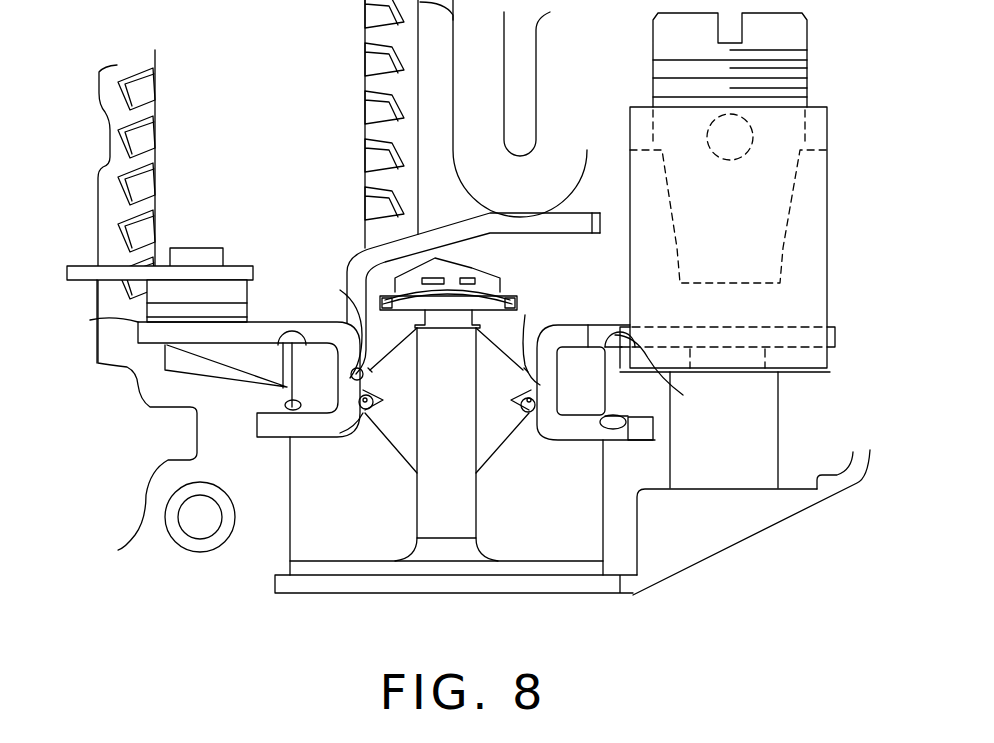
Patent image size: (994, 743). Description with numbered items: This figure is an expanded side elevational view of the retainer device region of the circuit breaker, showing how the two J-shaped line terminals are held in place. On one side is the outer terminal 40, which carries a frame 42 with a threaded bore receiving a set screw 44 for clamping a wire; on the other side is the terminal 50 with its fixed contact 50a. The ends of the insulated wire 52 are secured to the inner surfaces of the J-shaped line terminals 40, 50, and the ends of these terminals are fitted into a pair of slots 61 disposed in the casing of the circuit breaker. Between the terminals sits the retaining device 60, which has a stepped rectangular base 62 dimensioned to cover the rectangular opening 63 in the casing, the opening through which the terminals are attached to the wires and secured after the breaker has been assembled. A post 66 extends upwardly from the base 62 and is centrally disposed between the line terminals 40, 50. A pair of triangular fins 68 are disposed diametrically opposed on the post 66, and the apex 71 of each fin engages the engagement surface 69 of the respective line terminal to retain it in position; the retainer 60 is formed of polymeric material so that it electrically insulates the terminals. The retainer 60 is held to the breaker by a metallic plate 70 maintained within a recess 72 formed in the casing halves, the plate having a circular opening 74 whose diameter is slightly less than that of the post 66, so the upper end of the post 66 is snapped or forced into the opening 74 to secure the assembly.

The outer terminal 40 is at (590, 433).
The frame 42 is at (829, 231).
The set screw 44 is at (808, 43).
The terminal 50 is at (270, 428).
The fixed contact 50a is at (138, 318).
The insulated wire 52 is at (357, 427).
The retaining device 60 is at (348, 621).
The slot 61 is at (292, 405).
The stepped rectangular base 62 is at (468, 587).
The rectangular opening 63 is at (618, 588).
The post 66 is at (428, 511).
The triangular fin 68 is at (390, 440).
The engagement surface 69 is at (356, 336).
The plate 70 is at (490, 297).
The apex 71 is at (526, 368).
The recess 72 is at (500, 274).
The circular opening 74 is at (372, 258).